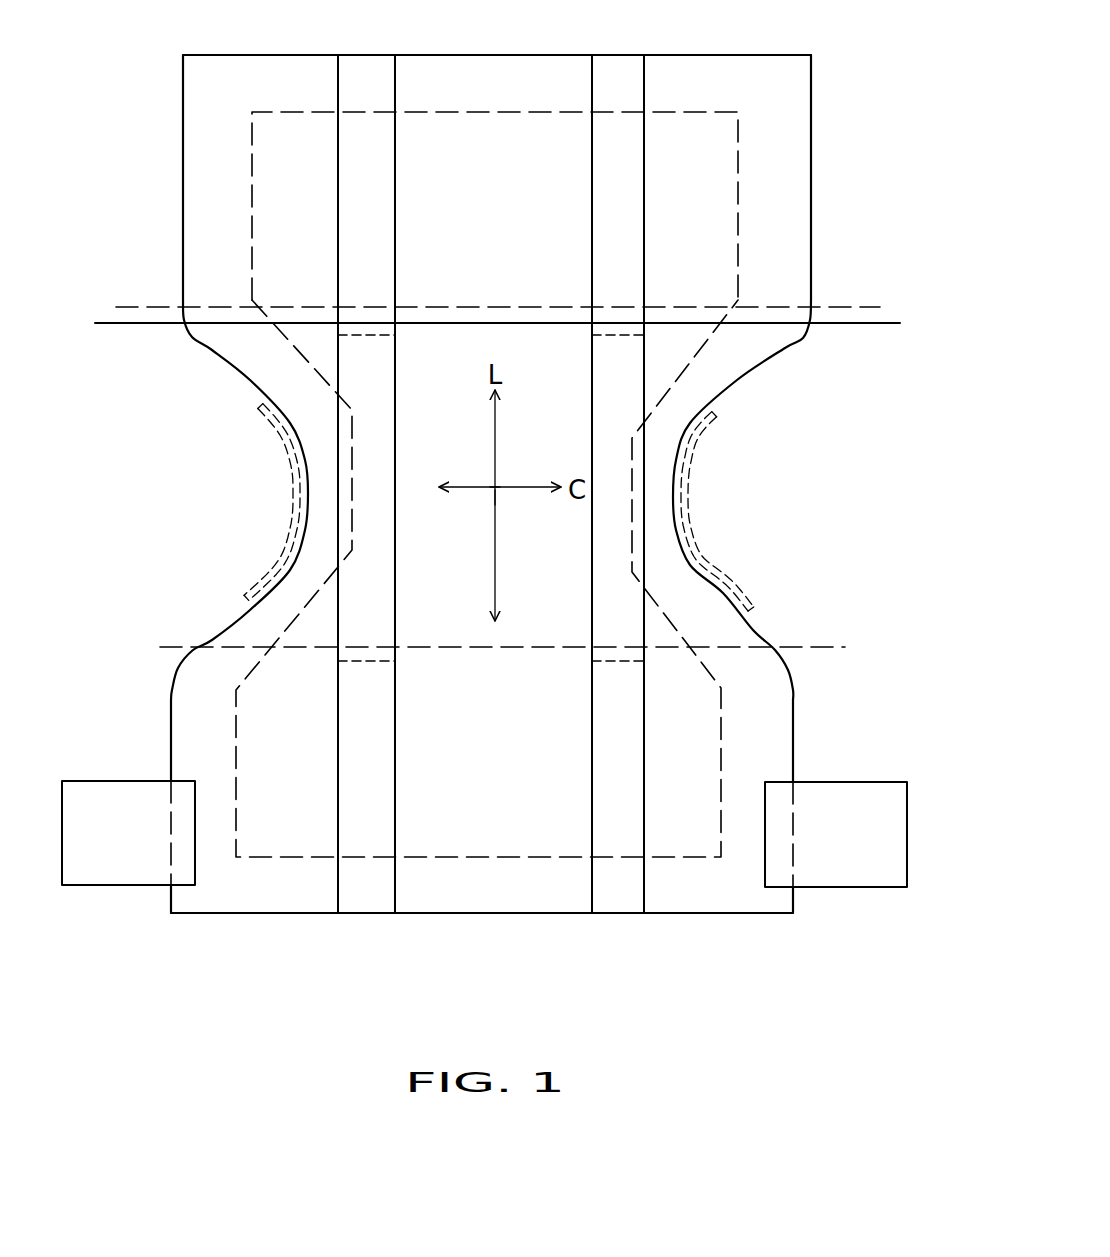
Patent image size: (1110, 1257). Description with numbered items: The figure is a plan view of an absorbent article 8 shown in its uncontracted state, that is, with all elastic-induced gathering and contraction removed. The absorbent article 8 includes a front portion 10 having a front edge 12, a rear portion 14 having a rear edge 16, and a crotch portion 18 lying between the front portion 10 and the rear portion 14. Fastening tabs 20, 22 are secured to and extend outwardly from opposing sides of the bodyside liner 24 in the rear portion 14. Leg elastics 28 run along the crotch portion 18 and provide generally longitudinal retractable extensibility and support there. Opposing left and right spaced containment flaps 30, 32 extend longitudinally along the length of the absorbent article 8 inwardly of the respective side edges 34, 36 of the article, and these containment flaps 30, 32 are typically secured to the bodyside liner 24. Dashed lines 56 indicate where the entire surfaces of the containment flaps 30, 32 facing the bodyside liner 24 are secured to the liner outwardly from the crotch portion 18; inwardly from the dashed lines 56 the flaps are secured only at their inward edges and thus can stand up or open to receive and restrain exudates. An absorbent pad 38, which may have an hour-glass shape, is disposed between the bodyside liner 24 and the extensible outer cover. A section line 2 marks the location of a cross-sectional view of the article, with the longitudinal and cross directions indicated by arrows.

The section line 2- 2 is at (116, 307).
The absorbent article 8 is at (480, 508).
The front portion 10 is at (852, 181).
The front edge 12 is at (727, 53).
The rear portion 14 is at (533, 811).
The rear edge 16 is at (677, 916).
The crotch portion 18 is at (495, 500).
The fastening tab 20 is at (838, 887).
The fastening tab 22 is at (115, 885).
The bodyside liner 24 is at (797, 697).
The leg elastics 28 is at (292, 421).
The containment flap 30 is at (592, 233).
The containment flap 32 is at (395, 230).
The side edge 34 is at (752, 631).
The side edge 36 is at (191, 345).
The absorbent pad 38 is at (252, 198).
The dashed lines 56 is at (372, 338).